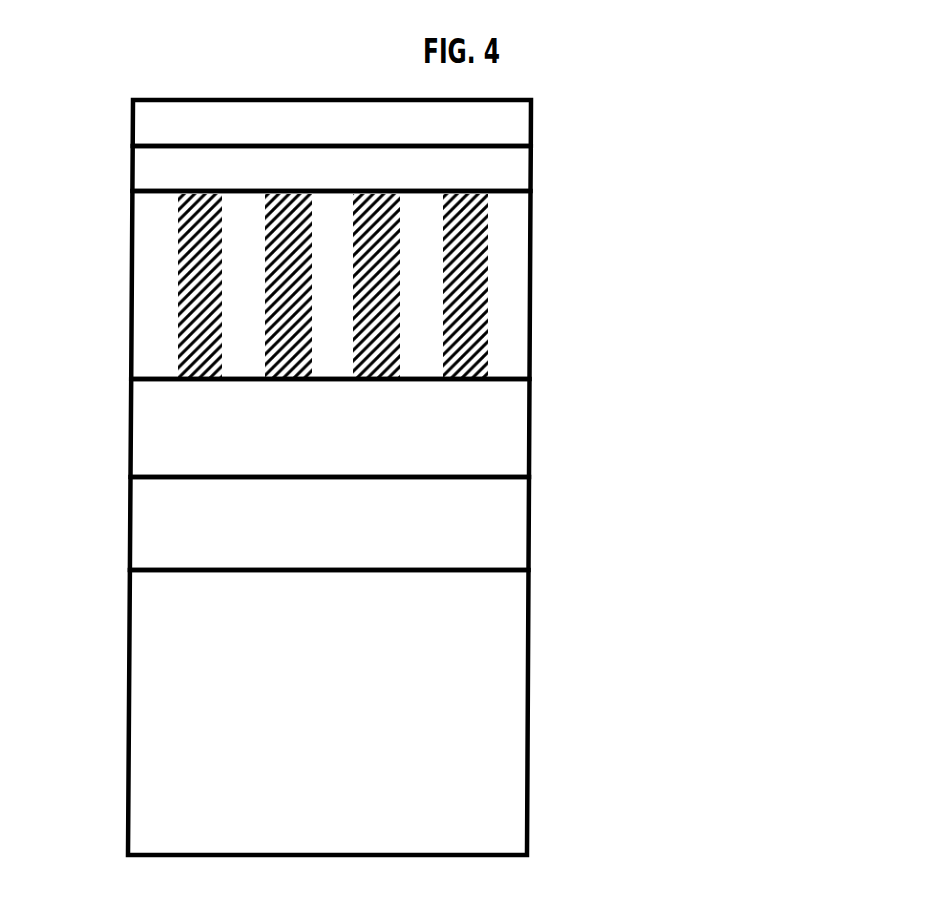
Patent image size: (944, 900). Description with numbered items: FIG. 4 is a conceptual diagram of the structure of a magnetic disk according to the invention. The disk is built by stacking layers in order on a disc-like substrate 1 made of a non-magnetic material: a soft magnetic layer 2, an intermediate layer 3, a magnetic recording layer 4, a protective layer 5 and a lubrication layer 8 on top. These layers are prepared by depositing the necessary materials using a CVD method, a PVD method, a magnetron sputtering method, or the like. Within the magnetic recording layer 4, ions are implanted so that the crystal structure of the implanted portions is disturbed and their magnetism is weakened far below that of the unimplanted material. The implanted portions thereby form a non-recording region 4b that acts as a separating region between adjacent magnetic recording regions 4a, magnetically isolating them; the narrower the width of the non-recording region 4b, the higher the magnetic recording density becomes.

The substrate 1 is at (507, 713).
The soft magnetic layer 2 is at (510, 526).
The intermediate layer 3 is at (510, 432).
The magnetic recording layer 4 is at (329, 285).
The magnetic recording regions 4a is at (148, 310).
The non-recording region 4b is at (193, 242).
The protective layer 5 is at (519, 170).
The lubrication layer 8 is at (519, 124).